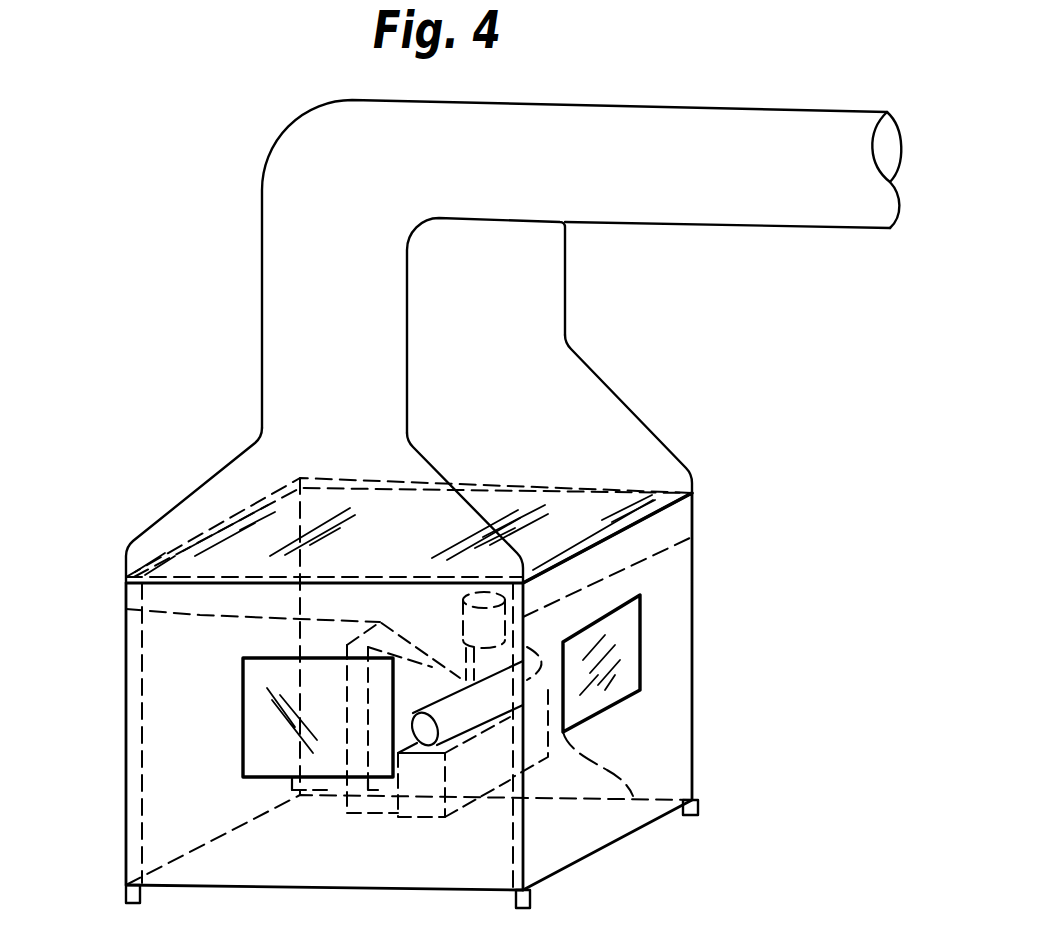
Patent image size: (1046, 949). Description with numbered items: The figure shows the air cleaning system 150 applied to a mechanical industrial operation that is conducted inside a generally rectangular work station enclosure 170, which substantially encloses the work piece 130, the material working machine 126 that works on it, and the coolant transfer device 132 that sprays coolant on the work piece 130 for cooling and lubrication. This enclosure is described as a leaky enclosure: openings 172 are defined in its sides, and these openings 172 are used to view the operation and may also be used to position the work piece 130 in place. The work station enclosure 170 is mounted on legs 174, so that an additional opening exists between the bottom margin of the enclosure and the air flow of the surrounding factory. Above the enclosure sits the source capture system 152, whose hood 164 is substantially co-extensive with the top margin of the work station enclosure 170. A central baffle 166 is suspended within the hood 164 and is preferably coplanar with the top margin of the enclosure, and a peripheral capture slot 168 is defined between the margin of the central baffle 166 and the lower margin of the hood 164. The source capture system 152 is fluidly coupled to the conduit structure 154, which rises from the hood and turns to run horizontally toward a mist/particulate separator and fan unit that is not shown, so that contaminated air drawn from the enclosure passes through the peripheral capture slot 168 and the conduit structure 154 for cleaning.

The material working machine 126 is at (126, 609).
The work piece 130 is at (633, 797).
The coolant transfer device 132 is at (688, 542).
The air cleaning system 150 is at (257, 176).
The source capture system 152 is at (260, 426).
The conduit structure 154 is at (676, 108).
The hood 164 is at (262, 312).
The central baffle 166 is at (527, 528).
The peripheral capture slot 168 is at (645, 510).
The work station enclosure 170 is at (124, 808).
The openings 172 is at (243, 712).
The legs 174 is at (126, 891).